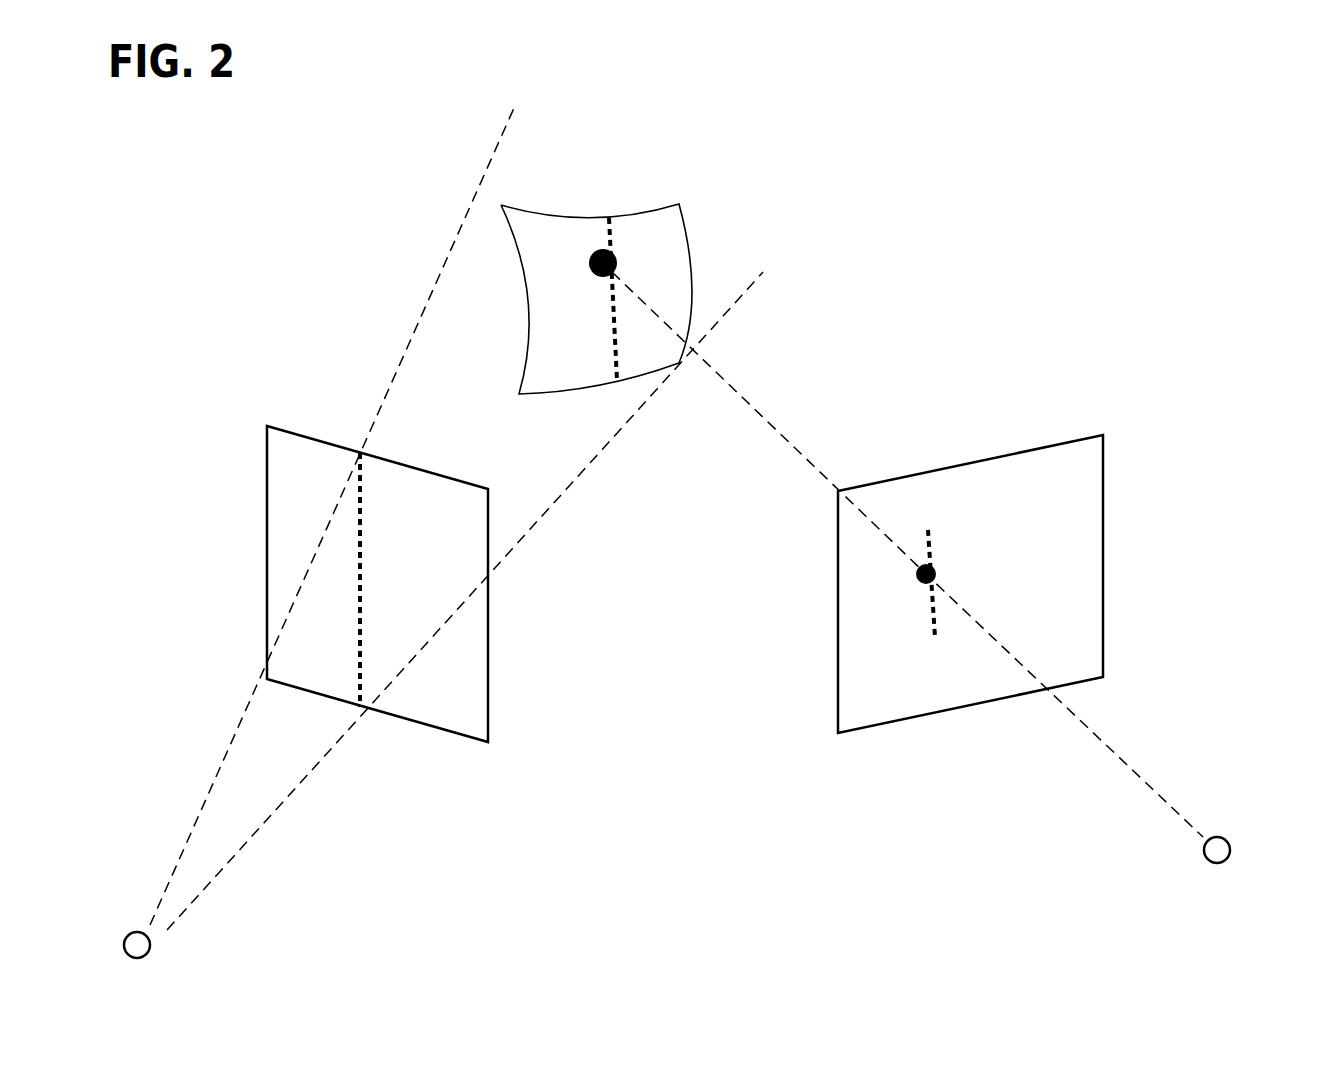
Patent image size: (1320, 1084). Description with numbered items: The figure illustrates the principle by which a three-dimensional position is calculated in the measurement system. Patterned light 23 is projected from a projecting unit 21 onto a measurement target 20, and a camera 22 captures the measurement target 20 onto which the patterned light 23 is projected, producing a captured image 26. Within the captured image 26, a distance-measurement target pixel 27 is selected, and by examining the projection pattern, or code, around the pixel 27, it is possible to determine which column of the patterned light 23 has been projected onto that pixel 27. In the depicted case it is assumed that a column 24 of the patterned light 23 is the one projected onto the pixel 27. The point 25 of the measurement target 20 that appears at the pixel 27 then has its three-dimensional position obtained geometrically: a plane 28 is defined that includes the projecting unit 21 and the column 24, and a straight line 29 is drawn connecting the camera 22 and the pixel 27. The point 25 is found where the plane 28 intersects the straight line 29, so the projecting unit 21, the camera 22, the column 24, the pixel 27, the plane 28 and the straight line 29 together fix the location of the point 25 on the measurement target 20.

The measurement target 20 is at (680, 207).
The projecting unit 21 is at (153, 934).
The camera 22 is at (1217, 837).
The patterned light 23 is at (489, 652).
The column 24 is at (363, 568).
The point 25 is at (612, 250).
The captured image 26 is at (1105, 527).
The distance-measurement target pixel 27 is at (935, 567).
The plane 28 is at (253, 797).
The straight line 29 is at (1113, 750).